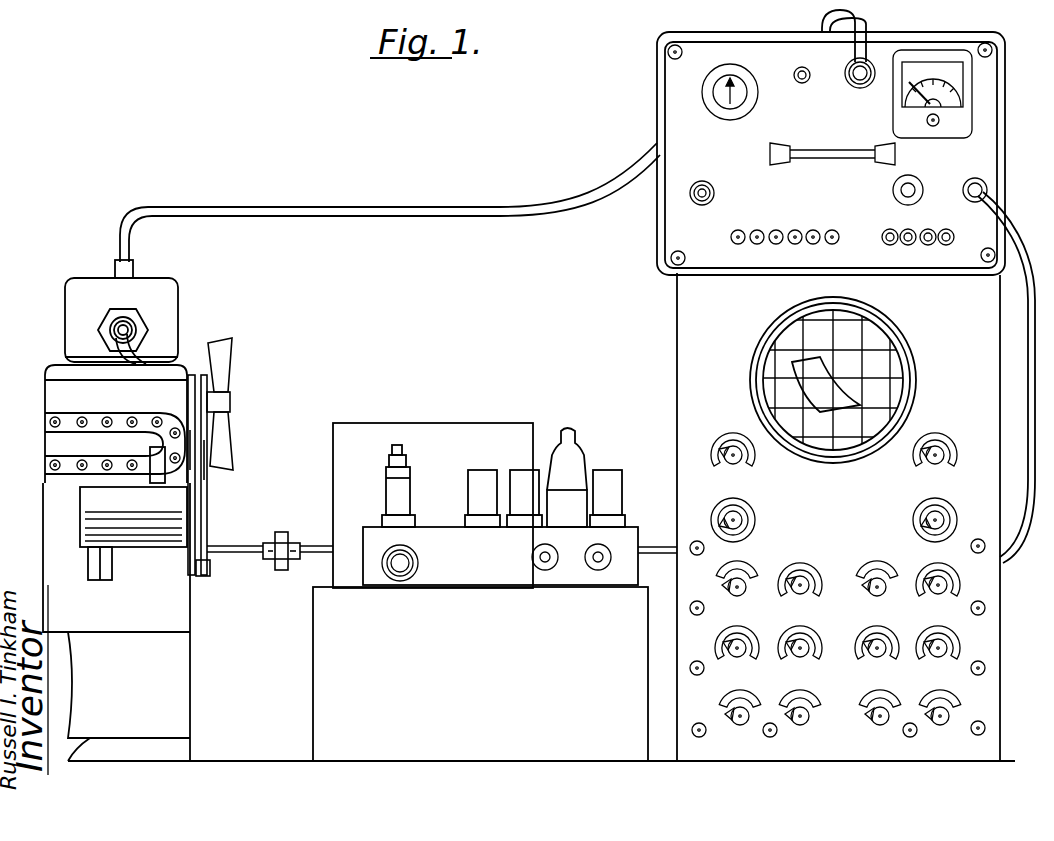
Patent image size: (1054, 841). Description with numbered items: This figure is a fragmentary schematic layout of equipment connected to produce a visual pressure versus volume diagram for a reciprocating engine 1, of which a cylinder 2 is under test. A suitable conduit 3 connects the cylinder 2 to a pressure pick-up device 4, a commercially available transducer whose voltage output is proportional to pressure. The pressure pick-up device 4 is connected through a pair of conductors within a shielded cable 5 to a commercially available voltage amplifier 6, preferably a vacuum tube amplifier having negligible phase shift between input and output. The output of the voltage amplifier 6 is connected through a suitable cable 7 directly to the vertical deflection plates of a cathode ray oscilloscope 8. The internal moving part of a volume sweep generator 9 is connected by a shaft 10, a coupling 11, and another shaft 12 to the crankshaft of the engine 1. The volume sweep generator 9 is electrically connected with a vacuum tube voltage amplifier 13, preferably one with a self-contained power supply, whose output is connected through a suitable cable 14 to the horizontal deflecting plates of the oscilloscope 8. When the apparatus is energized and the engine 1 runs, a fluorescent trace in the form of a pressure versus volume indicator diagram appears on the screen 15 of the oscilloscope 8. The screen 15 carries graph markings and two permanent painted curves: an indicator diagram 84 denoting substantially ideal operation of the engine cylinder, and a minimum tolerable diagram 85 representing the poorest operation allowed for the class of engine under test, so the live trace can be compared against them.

The reciprocating engine 1 is at (55, 500).
The cylinder 2 is at (137, 390).
The conduit 3 is at (140, 348).
The pressure pick-up device 4 is at (167, 291).
The shielded cable 5 is at (415, 207).
The voltage amplifier 6 is at (988, 158).
The cable 7 is at (1028, 362).
The cathode ray oscilloscope 8 is at (690, 343).
The volume sweep generator 9 is at (352, 438).
The shaft 10 is at (304, 546).
The coupling 11 is at (280, 532).
The shaft 12 is at (222, 546).
The vacuum tube voltage amplifier 13 is at (484, 565).
The cable 14 is at (652, 546).
The screen 15 is at (878, 342).
The indicator diagram 84 is at (827, 370).
The minimum tolerable diagram 85 is at (826, 412).